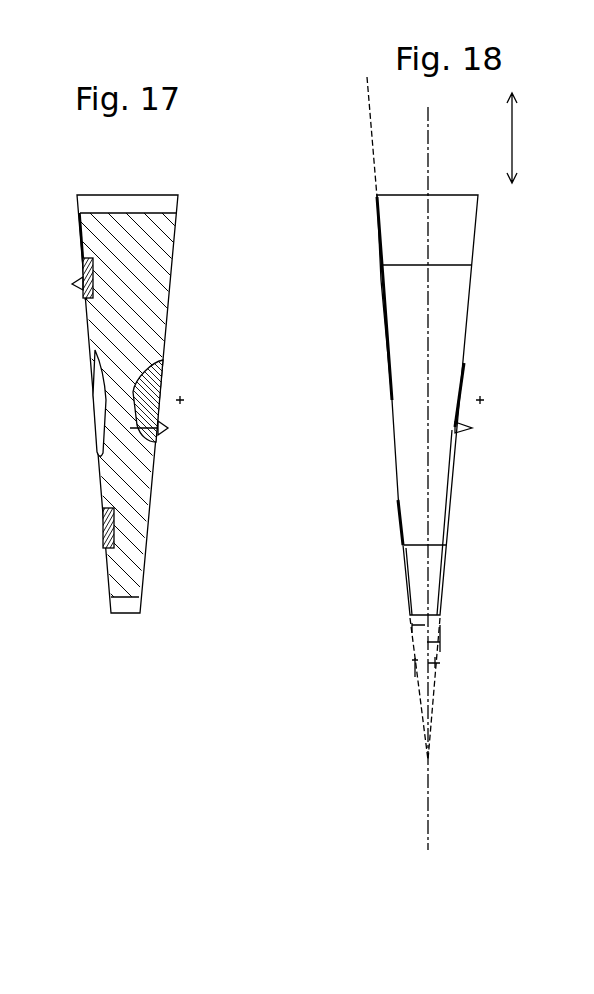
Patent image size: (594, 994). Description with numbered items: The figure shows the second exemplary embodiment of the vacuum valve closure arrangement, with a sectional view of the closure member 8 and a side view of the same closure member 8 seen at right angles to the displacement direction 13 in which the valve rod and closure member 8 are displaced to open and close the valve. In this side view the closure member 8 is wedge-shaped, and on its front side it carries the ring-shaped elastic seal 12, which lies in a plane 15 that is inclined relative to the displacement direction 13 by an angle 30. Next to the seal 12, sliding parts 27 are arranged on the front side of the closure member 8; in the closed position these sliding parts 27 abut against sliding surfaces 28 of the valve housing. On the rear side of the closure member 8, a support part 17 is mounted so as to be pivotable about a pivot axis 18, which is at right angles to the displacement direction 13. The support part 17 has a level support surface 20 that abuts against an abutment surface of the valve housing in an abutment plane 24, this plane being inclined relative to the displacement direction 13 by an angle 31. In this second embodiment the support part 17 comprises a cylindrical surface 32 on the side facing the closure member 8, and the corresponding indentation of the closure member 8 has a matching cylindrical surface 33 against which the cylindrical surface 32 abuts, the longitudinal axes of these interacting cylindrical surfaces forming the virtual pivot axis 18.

In FIG. 17, the closure member 8 is at (125, 572).
In FIG. 18, the closure member 8 is at (435, 522).
In FIG. 17, the elastic seal 12 is at (100, 420).
In FIG. 18, the displacement direction 13 is at (512, 137).
In FIG. 18, the plane of the seal 15 is at (413, 677).
In FIG. 17, the support part 17 is at (164, 367).
In FIG. 18, the support part 17 is at (464, 373).
In FIG. 17, the pivot axis 18 is at (181, 400).
In FIG. 18, the pivot axis 18 is at (480, 400).
In FIG. 17, the support surface 20 is at (130, 428).
In FIG. 18, the support surface 20 is at (470, 427).
In FIG. 18, the abutment plane 24 is at (440, 627).
In FIG. 17, the sliding part 27 is at (83, 272).
In FIG. 18, the sliding part 27 is at (392, 398).
In FIG. 17, the sliding surface 28 is at (83, 284).
In FIG. 18, the angle of inclination 30 is at (416, 638).
In FIG. 18, the angle of inclination 31 is at (437, 663).
In FIG. 17, the cylindrical surface 32 is at (157, 432).
In FIG. 17, the cylindrical surface 33 is at (160, 413).